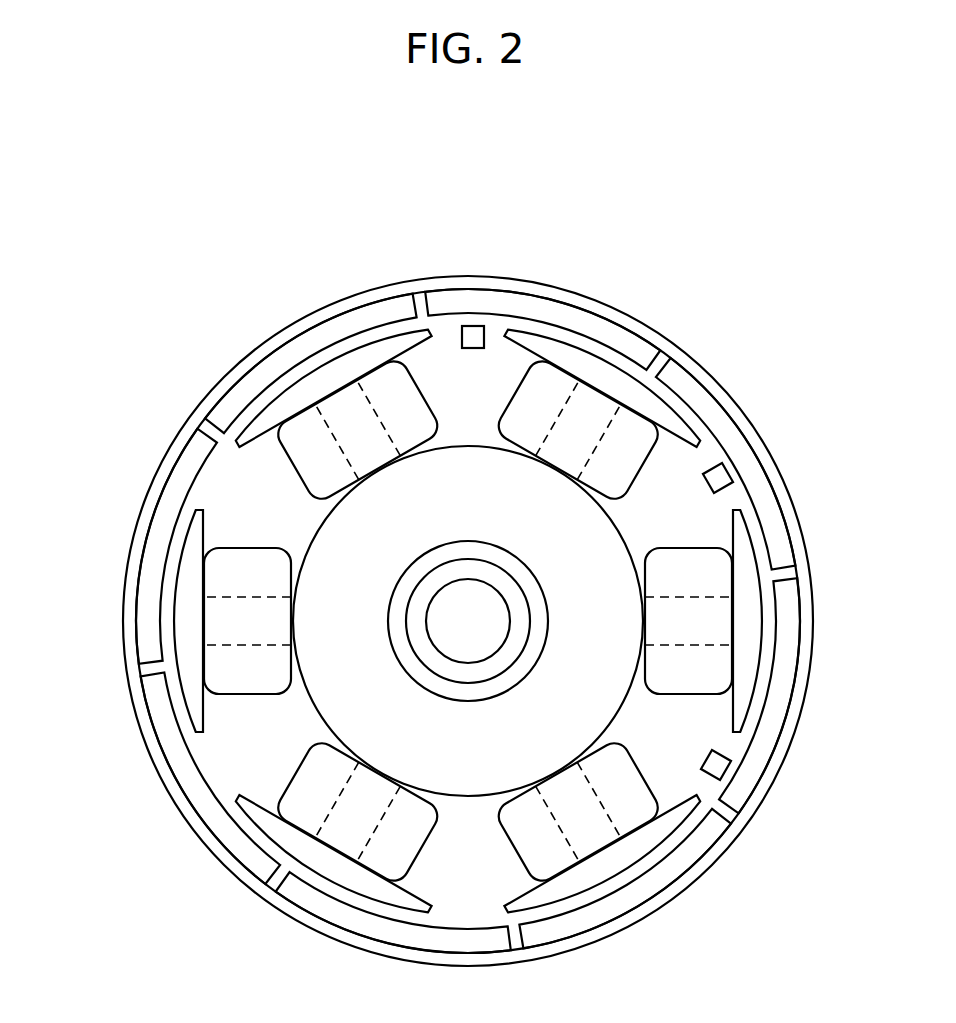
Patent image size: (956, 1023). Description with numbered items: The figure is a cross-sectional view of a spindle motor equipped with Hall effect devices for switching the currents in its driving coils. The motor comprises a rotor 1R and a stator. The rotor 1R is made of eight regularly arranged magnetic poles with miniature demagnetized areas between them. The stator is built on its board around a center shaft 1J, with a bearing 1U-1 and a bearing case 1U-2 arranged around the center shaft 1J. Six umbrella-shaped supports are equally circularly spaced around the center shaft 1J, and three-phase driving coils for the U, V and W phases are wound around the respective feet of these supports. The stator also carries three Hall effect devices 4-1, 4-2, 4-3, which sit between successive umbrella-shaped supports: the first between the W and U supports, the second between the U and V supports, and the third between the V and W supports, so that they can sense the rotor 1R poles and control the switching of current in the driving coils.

The rotor 1R is at (725, 383).
The center shaft 1J is at (483, 615).
The bearing 1U-1 is at (513, 650).
The bearing case 1U-2 is at (478, 697).
The Hall effect device 4-1 is at (710, 765).
The Hall effect device 4-2 is at (727, 464).
The Hall effect device 4-3 is at (477, 327).